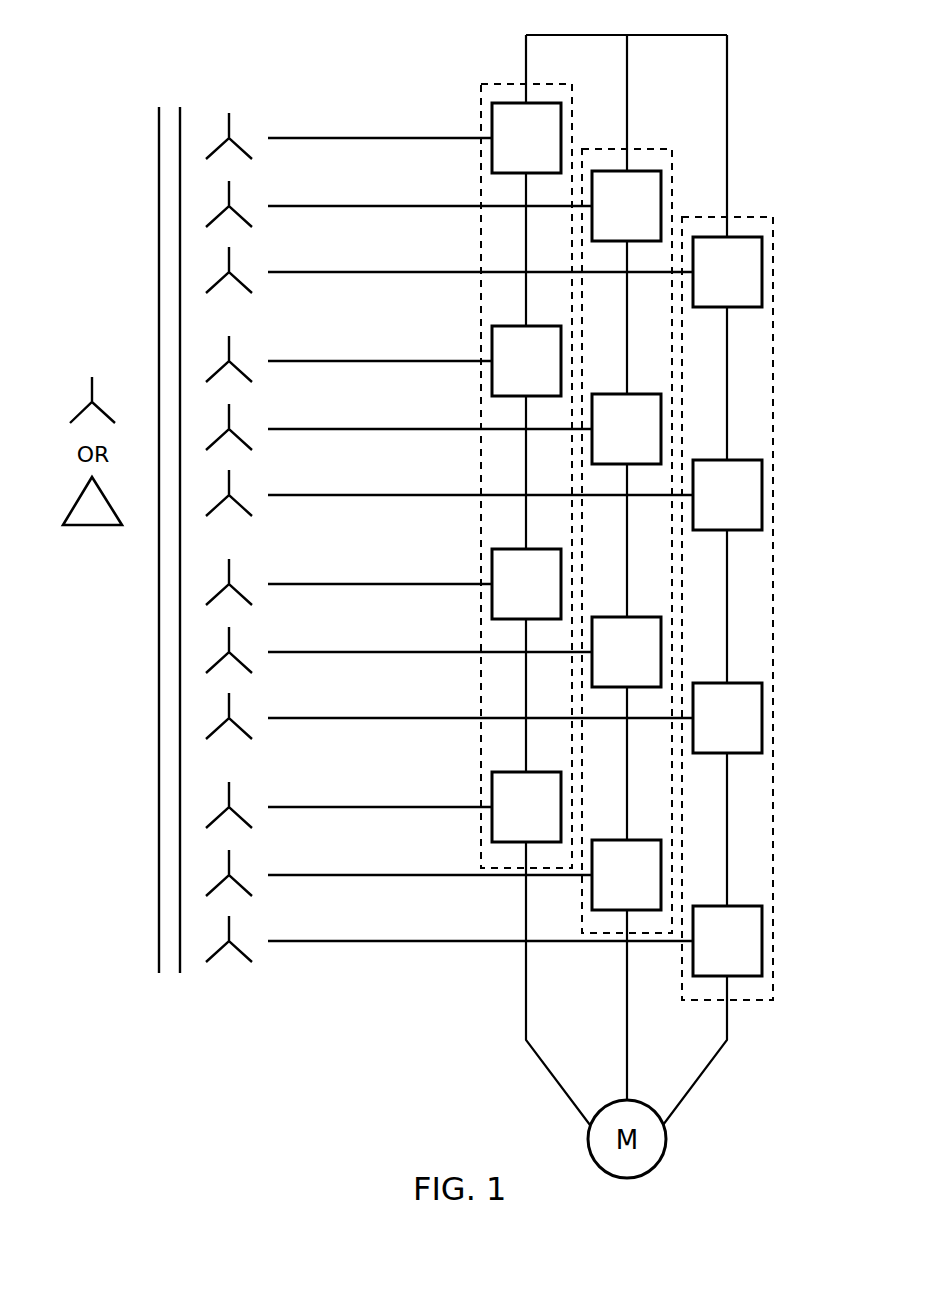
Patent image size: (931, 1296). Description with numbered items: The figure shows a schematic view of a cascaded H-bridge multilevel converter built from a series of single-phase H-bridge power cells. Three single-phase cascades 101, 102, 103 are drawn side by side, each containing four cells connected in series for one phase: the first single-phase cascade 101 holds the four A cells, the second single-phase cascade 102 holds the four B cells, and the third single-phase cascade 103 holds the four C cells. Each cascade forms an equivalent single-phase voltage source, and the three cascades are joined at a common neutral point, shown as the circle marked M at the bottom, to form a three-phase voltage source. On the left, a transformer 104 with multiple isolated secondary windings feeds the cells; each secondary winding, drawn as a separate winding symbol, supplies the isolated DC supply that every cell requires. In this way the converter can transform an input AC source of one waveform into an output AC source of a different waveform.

The single-phase cascade 101 is at (487, 78).
The single-phase cascade 102 is at (666, 146).
The single-phase cascade 103 is at (768, 212).
The transformer 104 is at (159, 190).